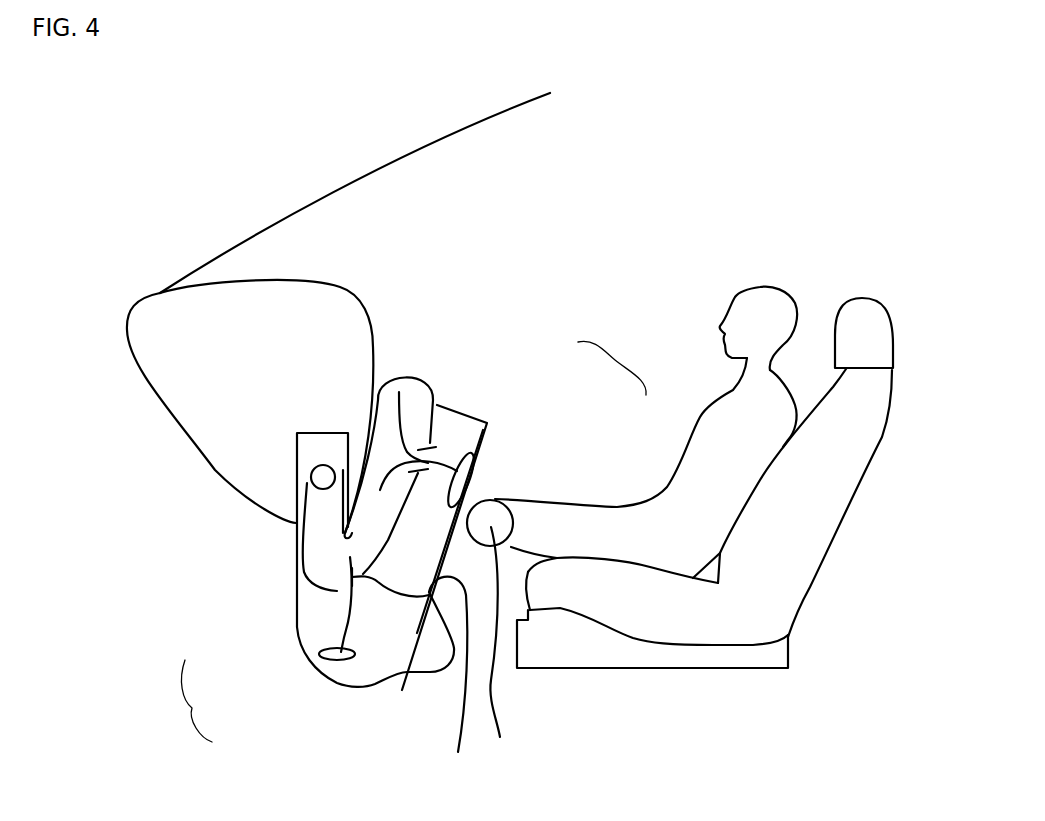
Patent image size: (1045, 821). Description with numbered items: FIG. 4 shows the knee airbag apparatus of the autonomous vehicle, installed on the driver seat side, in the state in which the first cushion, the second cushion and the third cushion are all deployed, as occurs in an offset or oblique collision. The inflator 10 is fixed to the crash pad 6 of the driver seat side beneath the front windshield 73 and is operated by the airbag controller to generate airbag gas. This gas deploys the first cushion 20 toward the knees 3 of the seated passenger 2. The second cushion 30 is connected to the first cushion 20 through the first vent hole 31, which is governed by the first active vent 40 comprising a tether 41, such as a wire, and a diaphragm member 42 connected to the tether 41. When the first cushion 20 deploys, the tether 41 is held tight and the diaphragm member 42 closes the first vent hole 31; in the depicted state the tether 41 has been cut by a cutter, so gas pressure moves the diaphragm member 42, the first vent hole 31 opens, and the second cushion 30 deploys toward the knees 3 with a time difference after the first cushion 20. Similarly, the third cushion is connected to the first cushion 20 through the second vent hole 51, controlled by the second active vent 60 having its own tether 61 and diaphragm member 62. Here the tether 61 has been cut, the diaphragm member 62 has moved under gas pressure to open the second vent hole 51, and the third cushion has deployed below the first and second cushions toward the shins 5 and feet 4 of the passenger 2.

The seated passenger 2 is at (747, 447).
The knees 3 is at (500, 648).
The feet 4 is at (421, 653).
The shins 5 is at (448, 682).
The crash pad 6 is at (147, 381).
The inflator 10 is at (311, 476).
The first cushion 20 is at (412, 380).
The second cushion 30 is at (460, 405).
The first vent hole 31 is at (399, 392).
The first active vent 40 is at (615, 360).
The tether 41 is at (452, 455).
The diaphragm member 42 is at (473, 468).
The second vent hole 51 is at (344, 571).
The second active vent 60 is at (177, 701).
The tether 61 is at (343, 632).
The diaphragm member 62 is at (333, 655).
The front windshield 73 is at (238, 241).